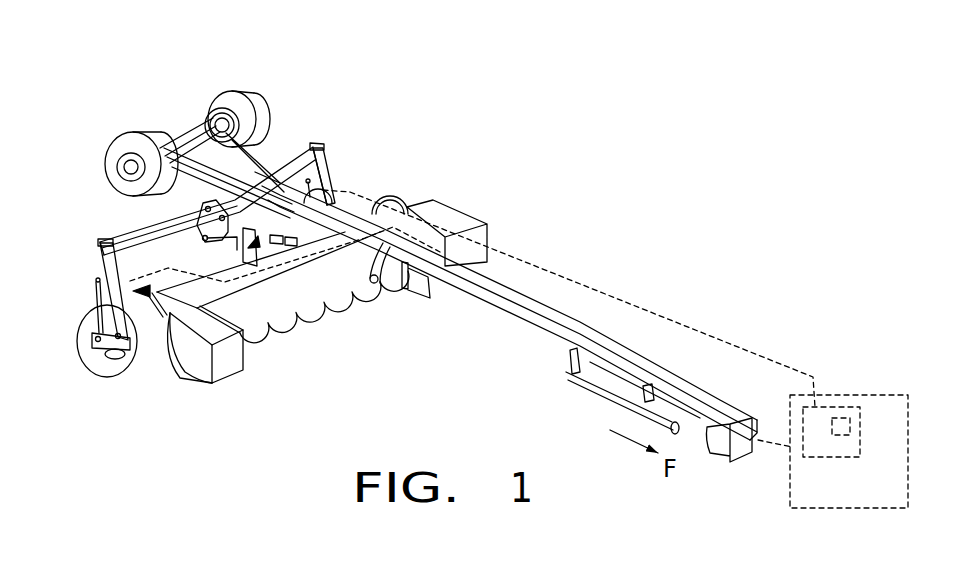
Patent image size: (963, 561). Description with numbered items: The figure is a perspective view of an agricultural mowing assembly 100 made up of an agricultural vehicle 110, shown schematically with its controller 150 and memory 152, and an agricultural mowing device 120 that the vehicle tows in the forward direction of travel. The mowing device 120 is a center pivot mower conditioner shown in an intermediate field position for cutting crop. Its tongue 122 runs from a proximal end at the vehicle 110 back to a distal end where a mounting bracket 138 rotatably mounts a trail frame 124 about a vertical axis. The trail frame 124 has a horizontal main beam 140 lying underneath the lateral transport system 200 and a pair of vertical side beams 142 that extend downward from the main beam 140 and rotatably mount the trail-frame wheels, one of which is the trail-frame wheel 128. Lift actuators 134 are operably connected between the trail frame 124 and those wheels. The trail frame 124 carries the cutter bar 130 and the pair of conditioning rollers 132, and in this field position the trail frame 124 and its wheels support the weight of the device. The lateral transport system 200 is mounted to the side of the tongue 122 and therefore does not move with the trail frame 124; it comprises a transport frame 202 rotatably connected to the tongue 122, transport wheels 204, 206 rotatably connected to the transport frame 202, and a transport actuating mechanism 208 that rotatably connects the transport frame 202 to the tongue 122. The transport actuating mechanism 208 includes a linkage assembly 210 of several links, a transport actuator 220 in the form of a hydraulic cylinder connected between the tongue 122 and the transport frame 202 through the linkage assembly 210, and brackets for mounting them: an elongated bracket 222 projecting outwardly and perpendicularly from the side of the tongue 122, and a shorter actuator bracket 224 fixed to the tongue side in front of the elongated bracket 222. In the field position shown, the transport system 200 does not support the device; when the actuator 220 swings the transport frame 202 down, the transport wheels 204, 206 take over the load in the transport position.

The agricultural mowing assembly 100 is at (810, 345).
The agricultural vehicle 110 is at (848, 510).
The agricultural mowing device 120 is at (443, 160).
The tongue 122 is at (543, 328).
The trail frame 124 is at (322, 138).
The trail-frame wheel 128 is at (100, 374).
The cutter bar 130 is at (333, 318).
The conditioning rollers 132 is at (130, 351).
The lift actuators 134 is at (96, 305).
The mounting bracket 138 is at (247, 147).
The main beam 140 is at (115, 238).
The side beams 142 is at (328, 177).
The controller 150 is at (858, 405).
The memory 152 is at (838, 416).
The lateral transport system 200 is at (218, 83).
The transport frame 202 is at (188, 123).
The transport wheel 204 is at (240, 97).
The transport wheel 206 is at (118, 143).
The transport actuating mechanism 208 is at (295, 260).
The linkage assembly 210 is at (257, 266).
The transport actuator 220 is at (352, 262).
The elongated bracket 222 is at (200, 220).
The actuator bracket 224 is at (390, 272).